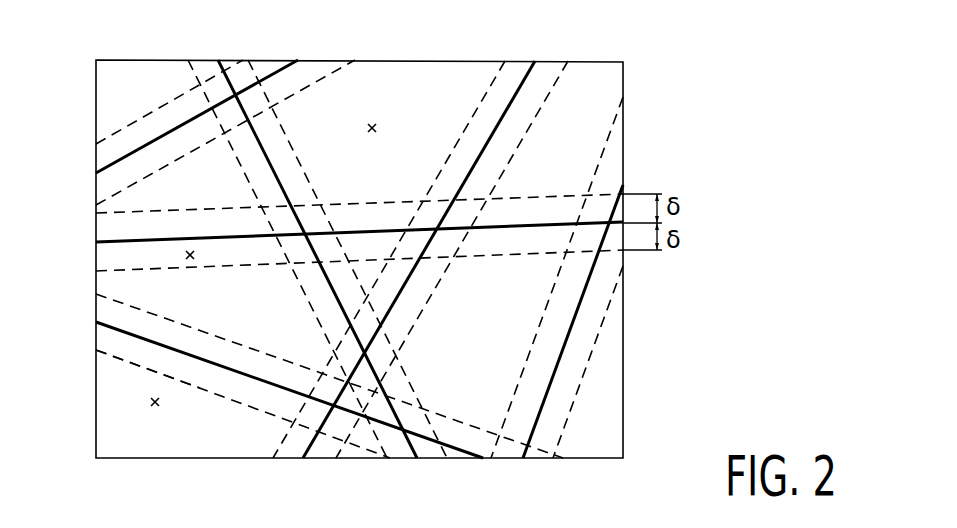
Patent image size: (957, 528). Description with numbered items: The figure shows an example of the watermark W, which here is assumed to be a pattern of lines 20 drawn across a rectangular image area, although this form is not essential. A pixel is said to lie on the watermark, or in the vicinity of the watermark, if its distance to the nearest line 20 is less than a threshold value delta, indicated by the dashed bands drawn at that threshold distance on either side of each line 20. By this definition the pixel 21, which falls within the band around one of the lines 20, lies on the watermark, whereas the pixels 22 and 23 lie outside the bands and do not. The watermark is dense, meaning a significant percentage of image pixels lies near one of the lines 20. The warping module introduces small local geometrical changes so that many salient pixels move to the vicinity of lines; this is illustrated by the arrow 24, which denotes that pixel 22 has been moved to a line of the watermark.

The lines 20 is at (219, 60).
The pixel 21 is at (200, 257).
The pixel 22 is at (158, 407).
The pixel 23 is at (375, 124).
The arrow 24 is at (166, 377).